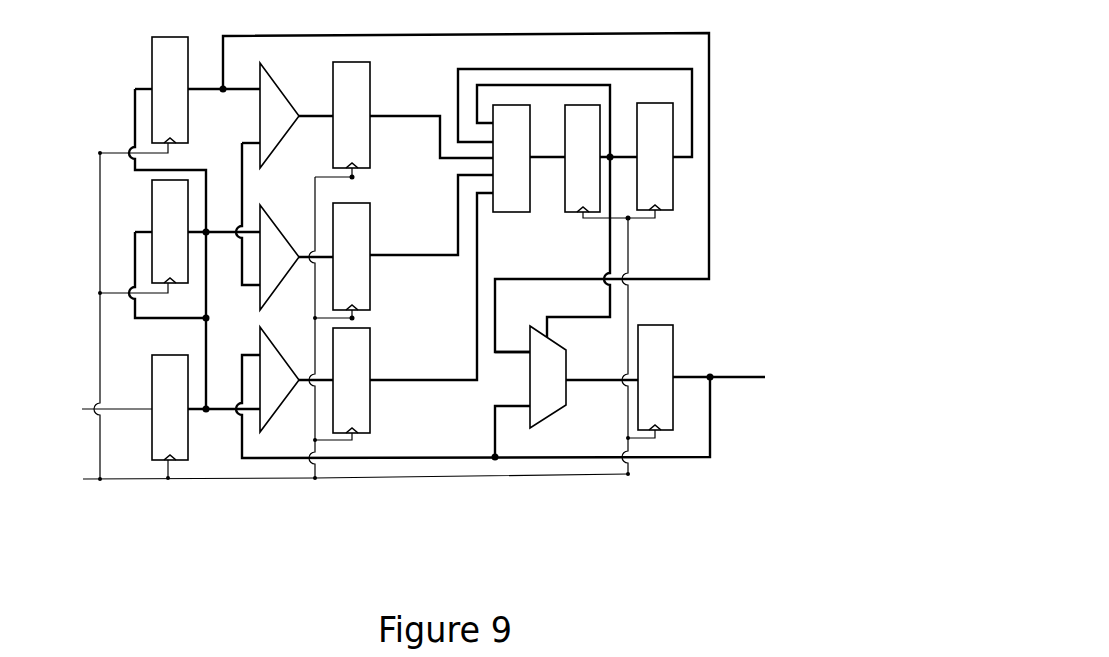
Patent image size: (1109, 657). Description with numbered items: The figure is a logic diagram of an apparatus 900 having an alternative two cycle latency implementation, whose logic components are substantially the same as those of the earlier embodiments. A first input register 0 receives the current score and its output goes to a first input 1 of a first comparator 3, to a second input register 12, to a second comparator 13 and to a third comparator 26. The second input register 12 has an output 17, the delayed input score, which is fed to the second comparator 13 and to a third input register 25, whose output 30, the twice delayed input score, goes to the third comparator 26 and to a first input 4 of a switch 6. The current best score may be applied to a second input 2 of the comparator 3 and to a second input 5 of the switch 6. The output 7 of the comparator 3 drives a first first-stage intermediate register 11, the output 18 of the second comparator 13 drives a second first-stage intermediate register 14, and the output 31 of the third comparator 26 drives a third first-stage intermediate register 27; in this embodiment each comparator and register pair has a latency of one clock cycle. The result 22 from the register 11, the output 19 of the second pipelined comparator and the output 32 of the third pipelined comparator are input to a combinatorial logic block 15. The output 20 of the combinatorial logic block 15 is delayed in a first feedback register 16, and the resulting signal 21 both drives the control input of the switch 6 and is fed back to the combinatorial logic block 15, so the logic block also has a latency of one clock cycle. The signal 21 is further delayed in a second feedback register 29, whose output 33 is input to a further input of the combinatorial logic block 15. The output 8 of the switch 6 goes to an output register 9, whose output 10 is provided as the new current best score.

The apparatus 900 is at (800, 75).
The first input register 0 is at (170, 407).
The first input of first comparator 1 is at (224, 399).
The second input of comparator 2 is at (473, 399).
The first comparator 3 is at (279, 379).
The first input of switch 4 is at (512, 342).
The second input of switch 5 is at (512, 422).
The switch 6 is at (548, 377).
The output of comparator 3 7 is at (316, 373).
The output of switch 8 is at (602, 368).
The output register 9 is at (655, 377).
The output of output register 10 is at (758, 372).
The first first-stage intermediate register 11 is at (351, 380).
The second input register 12 is at (170, 231).
The second comparator 13 is at (279, 257).
The second first-stage intermediate register 14 is at (351, 256).
The combinatorial logic block 15 is at (511, 158).
The first feedback register 16 is at (582, 158).
The output of second input register 17 is at (224, 214).
The output of second comparator 18 is at (316, 244).
The output of second pipelined comparator 19 is at (431, 216).
The output of combinatorial logic block 20 is at (547, 145).
The output of first feedback register 21 is at (562, 211).
The first comparison result signal 22 is at (431, 286).
The third input register 25 is at (170, 90).
The third comparator 26 is at (279, 115).
The third first-stage intermediate register 27 is at (351, 115).
The second feedback register 29 is at (655, 156).
The output of third input register 30 is at (224, 98).
The output of third comparator 31 is at (316, 103).
The output of third pipelined comparator 32 is at (431, 123).
The output of second feedback register 33 is at (580, 123).